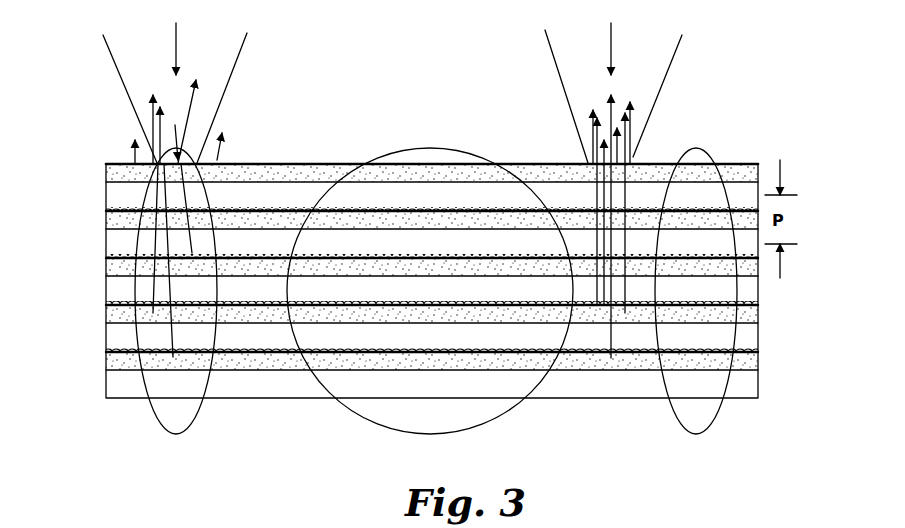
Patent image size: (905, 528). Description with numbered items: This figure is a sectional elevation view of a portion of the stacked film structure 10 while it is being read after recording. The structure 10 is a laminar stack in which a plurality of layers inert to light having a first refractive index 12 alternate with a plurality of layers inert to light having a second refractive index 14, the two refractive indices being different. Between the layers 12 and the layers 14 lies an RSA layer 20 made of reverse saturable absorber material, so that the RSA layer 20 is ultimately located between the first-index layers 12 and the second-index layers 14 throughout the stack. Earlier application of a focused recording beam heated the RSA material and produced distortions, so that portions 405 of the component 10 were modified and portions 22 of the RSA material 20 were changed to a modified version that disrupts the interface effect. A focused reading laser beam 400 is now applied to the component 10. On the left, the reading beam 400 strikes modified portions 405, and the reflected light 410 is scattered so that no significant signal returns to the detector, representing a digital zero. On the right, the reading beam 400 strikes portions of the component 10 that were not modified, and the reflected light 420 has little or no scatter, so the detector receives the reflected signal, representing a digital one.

The stacked film structure 10 is at (736, 66).
The layers inert to light having a first refractive index 12 is at (106, 267).
The layers inert to light having a second refractive index 14 is at (110, 298).
The RSA layer 20 is at (107, 259).
The modified portions of the RSA material 22 is at (150, 257).
The focused reading laser beam 400 is at (177, 53).
The modified portions of the component 405 is at (196, 417).
The scattered reflected light 410 is at (157, 129).
The reflected light with little or no scatter 420 is at (620, 152).